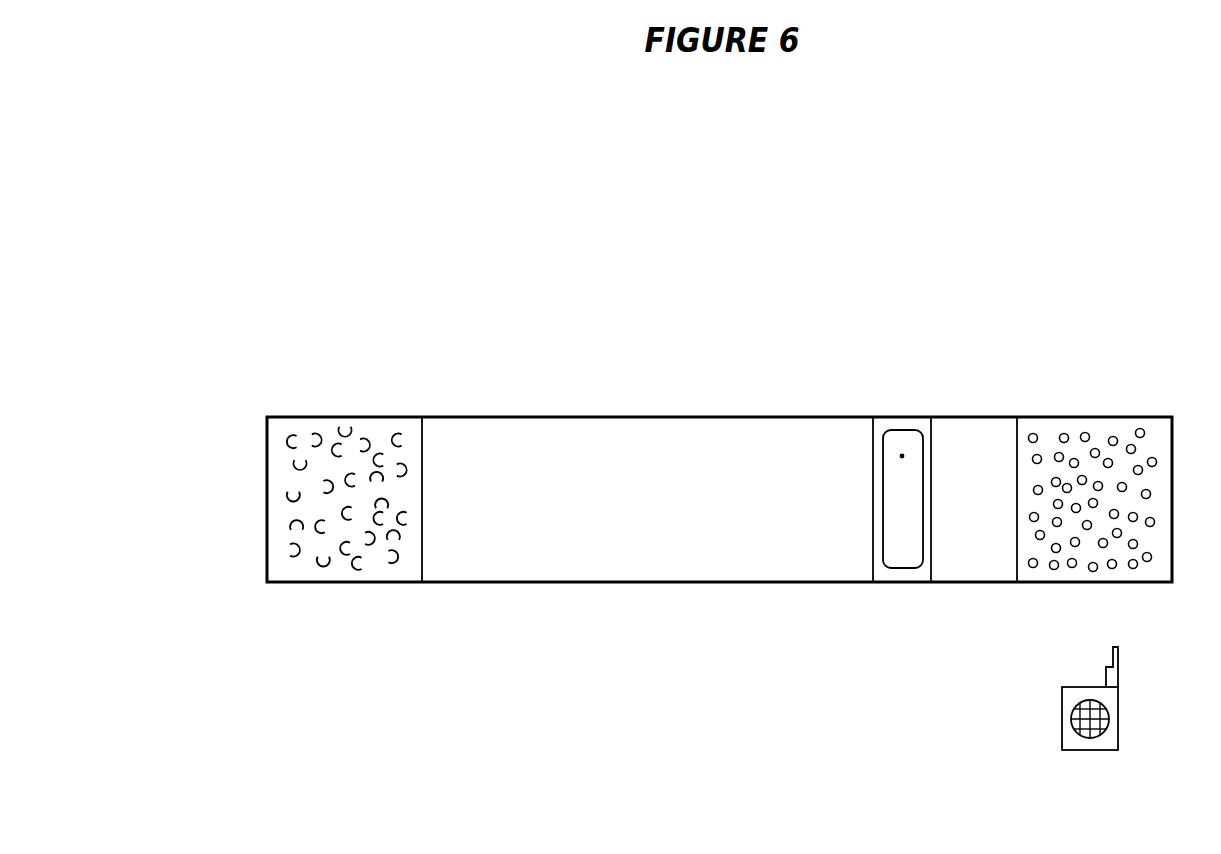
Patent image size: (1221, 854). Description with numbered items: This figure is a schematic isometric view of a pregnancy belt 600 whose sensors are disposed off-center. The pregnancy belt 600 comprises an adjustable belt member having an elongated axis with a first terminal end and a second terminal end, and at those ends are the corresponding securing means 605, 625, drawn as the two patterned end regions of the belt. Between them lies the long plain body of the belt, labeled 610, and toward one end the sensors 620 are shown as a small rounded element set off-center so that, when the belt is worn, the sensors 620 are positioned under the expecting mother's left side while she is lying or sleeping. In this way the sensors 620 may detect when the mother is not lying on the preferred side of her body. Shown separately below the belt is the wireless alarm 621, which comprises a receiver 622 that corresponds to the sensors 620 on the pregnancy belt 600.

The pregnancy belt 600 is at (196, 290).
The securing means 605 is at (365, 415).
The body / substrate region 610 is at (553, 417).
The sensors 620 is at (902, 456).
The wireless alarm 621 is at (1120, 722).
The receiver 622 is at (1120, 655).
The securing means 625 is at (1095, 415).